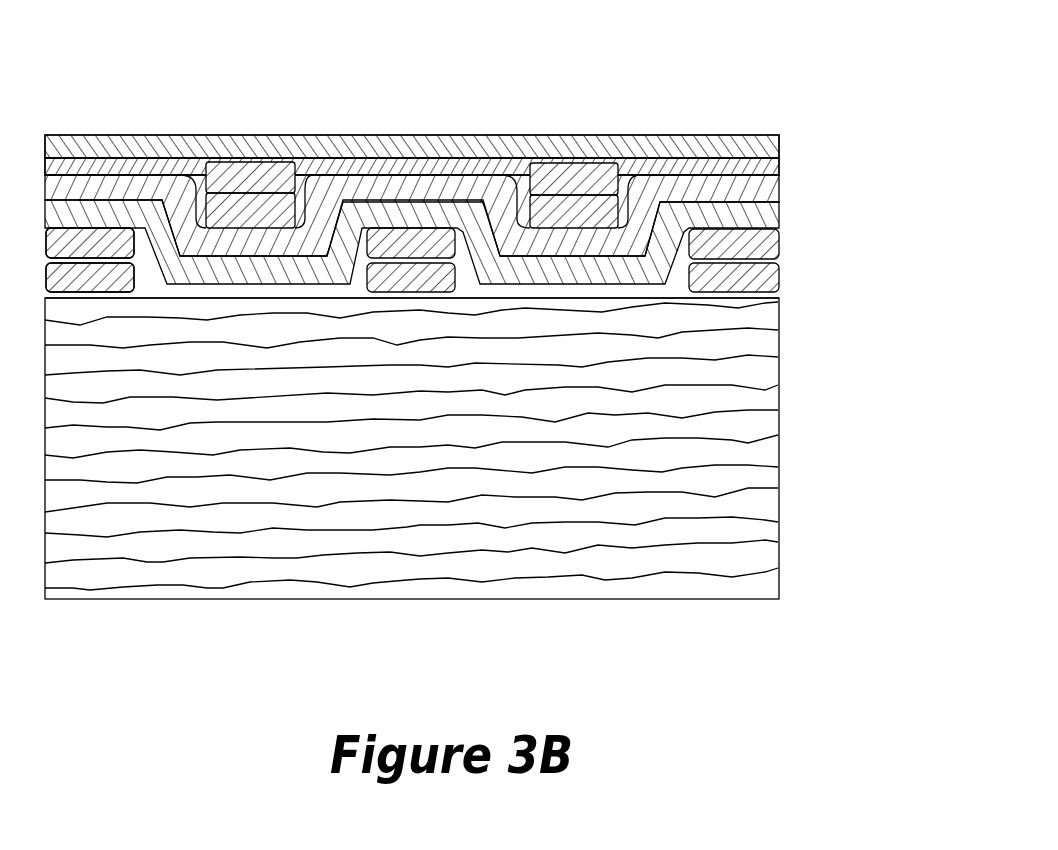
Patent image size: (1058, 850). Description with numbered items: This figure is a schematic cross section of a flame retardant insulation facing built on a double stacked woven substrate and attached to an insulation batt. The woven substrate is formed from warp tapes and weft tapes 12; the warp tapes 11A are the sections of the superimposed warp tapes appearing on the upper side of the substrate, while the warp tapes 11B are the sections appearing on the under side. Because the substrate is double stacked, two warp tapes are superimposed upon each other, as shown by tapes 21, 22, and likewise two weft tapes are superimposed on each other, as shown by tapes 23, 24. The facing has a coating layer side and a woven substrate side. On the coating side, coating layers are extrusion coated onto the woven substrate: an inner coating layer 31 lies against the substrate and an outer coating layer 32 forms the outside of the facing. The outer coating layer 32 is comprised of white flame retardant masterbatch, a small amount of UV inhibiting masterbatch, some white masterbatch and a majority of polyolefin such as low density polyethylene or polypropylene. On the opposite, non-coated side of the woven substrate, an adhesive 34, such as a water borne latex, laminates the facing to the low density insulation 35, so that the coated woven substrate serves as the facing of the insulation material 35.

The warp tapes 11A is at (253, 208).
The warp tapes 11B is at (103, 237).
The weft tapes 12 is at (90, 210).
The warp tape 21 is at (577, 175).
The warp tape 22 is at (538, 222).
The weft tape 23 is at (777, 185).
The weft tape 24 is at (760, 215).
The inner coating layer 31 is at (767, 168).
The outer coating layer 32 is at (775, 150).
The adhesive 34 is at (677, 293).
The low density insulation 35 is at (717, 425).